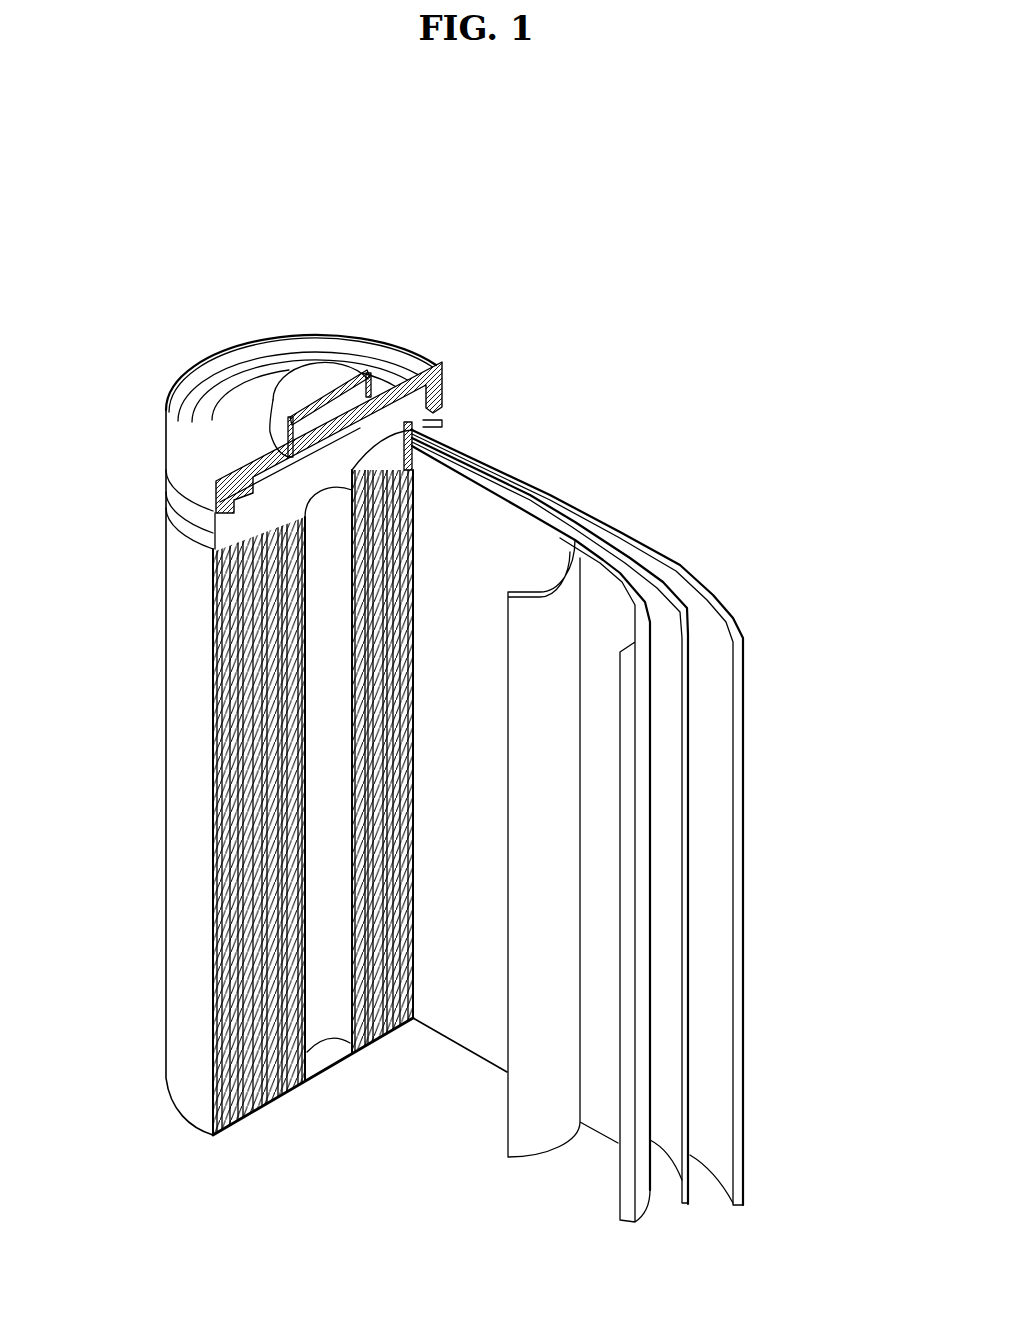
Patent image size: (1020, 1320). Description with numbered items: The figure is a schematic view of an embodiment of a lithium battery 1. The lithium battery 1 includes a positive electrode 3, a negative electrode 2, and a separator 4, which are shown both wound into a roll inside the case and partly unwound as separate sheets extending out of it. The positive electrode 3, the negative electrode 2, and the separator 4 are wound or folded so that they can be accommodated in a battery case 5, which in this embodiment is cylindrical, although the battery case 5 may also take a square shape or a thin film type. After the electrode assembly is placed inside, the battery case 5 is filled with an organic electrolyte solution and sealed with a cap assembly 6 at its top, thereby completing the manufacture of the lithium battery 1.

The lithium battery 1 is at (434, 749).
The negative electrode 2 is at (728, 617).
The positive electrode 3 is at (607, 568).
The separator 4 is at (542, 592).
The battery case 5 is at (180, 785).
The cap assembly 6 is at (299, 378).